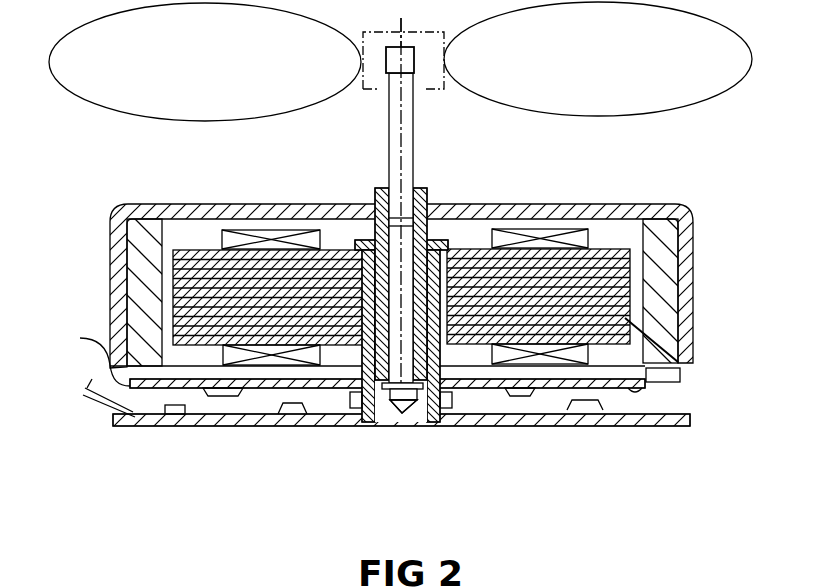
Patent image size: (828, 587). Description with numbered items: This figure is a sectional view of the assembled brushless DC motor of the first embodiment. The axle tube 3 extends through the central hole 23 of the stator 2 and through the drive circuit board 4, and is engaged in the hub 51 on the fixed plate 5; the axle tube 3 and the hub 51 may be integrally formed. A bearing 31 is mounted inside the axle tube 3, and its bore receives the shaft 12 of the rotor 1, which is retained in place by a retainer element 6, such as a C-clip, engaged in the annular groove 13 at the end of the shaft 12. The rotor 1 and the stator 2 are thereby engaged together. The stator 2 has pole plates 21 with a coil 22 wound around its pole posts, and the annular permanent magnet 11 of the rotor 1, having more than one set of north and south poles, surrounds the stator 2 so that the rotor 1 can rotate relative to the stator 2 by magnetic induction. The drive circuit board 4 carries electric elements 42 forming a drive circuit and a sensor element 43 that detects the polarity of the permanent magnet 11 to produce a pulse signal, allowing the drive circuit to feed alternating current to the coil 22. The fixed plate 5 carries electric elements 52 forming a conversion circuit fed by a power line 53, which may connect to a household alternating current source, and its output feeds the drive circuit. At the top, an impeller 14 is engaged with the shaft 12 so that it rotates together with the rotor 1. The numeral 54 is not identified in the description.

The rotor 1 is at (689, 240).
The stator 2 is at (192, 247).
The axle tube 3 is at (442, 245).
The drive circuit board 4 is at (352, 357).
The fixed plate 5 is at (285, 426).
The retainer element 6 is at (410, 380).
The permanent magnet 11 is at (667, 315).
The shaft 12 is at (405, 430).
The annular groove 13 is at (410, 380).
The impeller 14 is at (725, 78).
The pole plates 21 is at (686, 368).
The coil 22 is at (555, 243).
The central hole 23 is at (352, 240).
The bearing 31 is at (381, 402).
The electric elements 42 is at (230, 397).
The sensor element 43 is at (680, 382).
The hub 51 is at (366, 410).
The electric elements 52 is at (175, 414).
The power line 53 is at (99, 403).
The wiring 54 is at (165, 586).